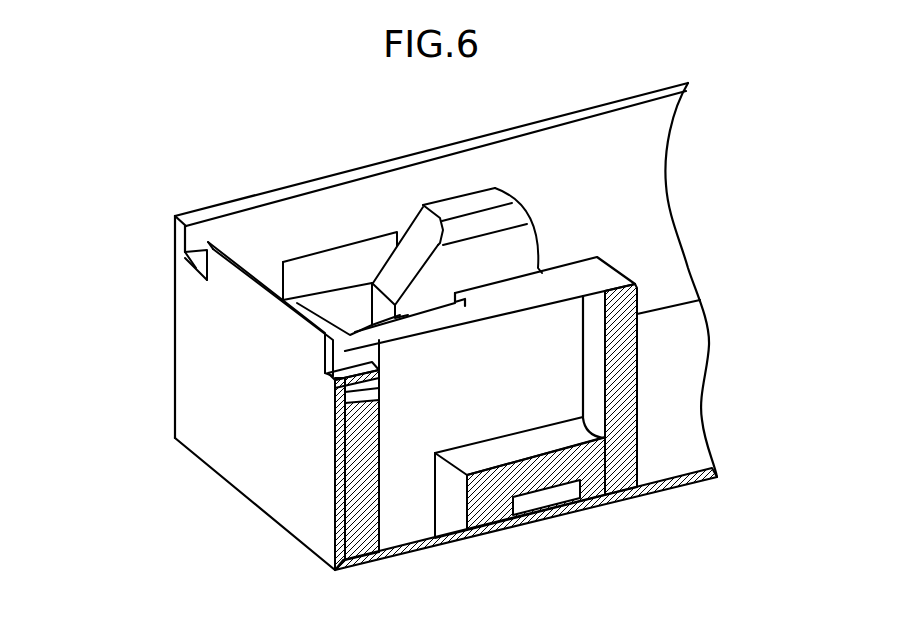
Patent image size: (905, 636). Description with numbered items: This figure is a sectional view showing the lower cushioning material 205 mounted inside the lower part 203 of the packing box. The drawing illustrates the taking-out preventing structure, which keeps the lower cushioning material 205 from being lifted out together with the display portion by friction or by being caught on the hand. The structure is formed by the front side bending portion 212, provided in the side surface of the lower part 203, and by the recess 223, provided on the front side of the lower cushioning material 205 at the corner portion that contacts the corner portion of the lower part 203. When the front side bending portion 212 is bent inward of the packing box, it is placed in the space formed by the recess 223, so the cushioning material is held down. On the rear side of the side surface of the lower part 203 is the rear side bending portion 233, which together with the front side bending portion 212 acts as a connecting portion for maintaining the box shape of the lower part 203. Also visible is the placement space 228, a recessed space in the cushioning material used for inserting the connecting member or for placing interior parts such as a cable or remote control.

The lower part 203 is at (637, 445).
The lower cushioning material 205 is at (547, 475).
The front side bending portion 212 is at (326, 372).
The recess 223 is at (360, 400).
The placement space 228 is at (527, 382).
The rear side bending portion 233 is at (193, 252).